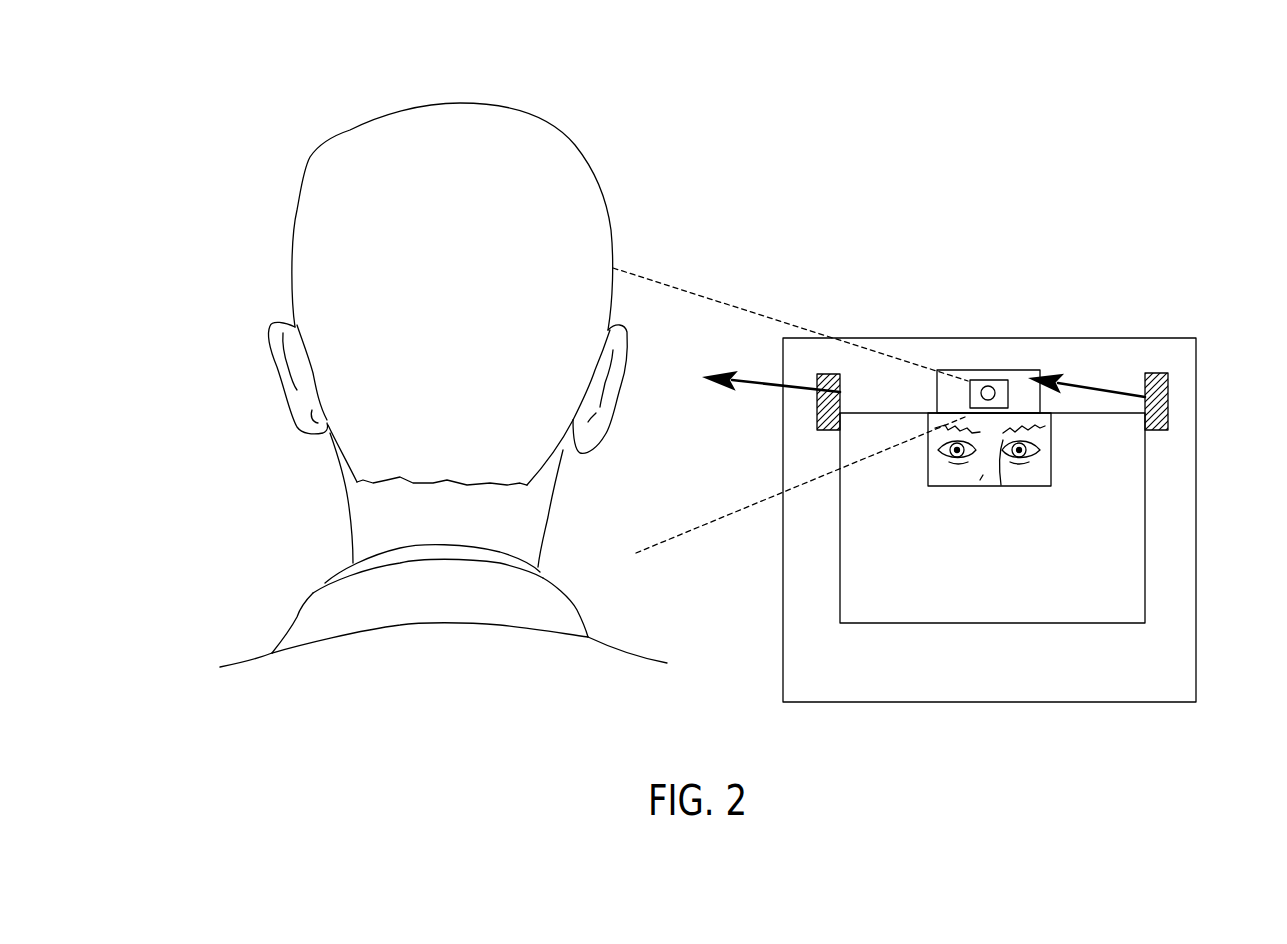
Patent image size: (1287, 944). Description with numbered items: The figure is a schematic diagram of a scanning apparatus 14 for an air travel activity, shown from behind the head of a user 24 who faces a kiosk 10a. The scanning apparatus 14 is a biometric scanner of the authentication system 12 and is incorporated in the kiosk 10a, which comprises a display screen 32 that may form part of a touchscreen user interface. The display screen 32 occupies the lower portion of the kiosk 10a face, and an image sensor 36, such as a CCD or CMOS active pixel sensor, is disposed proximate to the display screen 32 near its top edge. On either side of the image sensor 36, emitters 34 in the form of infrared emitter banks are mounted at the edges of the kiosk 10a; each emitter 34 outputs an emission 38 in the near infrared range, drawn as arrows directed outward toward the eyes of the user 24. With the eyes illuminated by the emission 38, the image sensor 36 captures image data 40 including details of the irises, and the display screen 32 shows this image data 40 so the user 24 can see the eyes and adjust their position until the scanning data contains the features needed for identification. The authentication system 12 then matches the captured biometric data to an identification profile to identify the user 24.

The user 24 is at (362, 153).
The authentication system 12 is at (899, 293).
The scanning apparatus 14 is at (975, 478).
The kiosk 10a is at (1150, 350).
The display screen 32 is at (1125, 533).
The emitter 34 is at (818, 430).
The image sensor 36 is at (992, 380).
The emission 38 is at (763, 387).
The image data 40 is at (1052, 468).